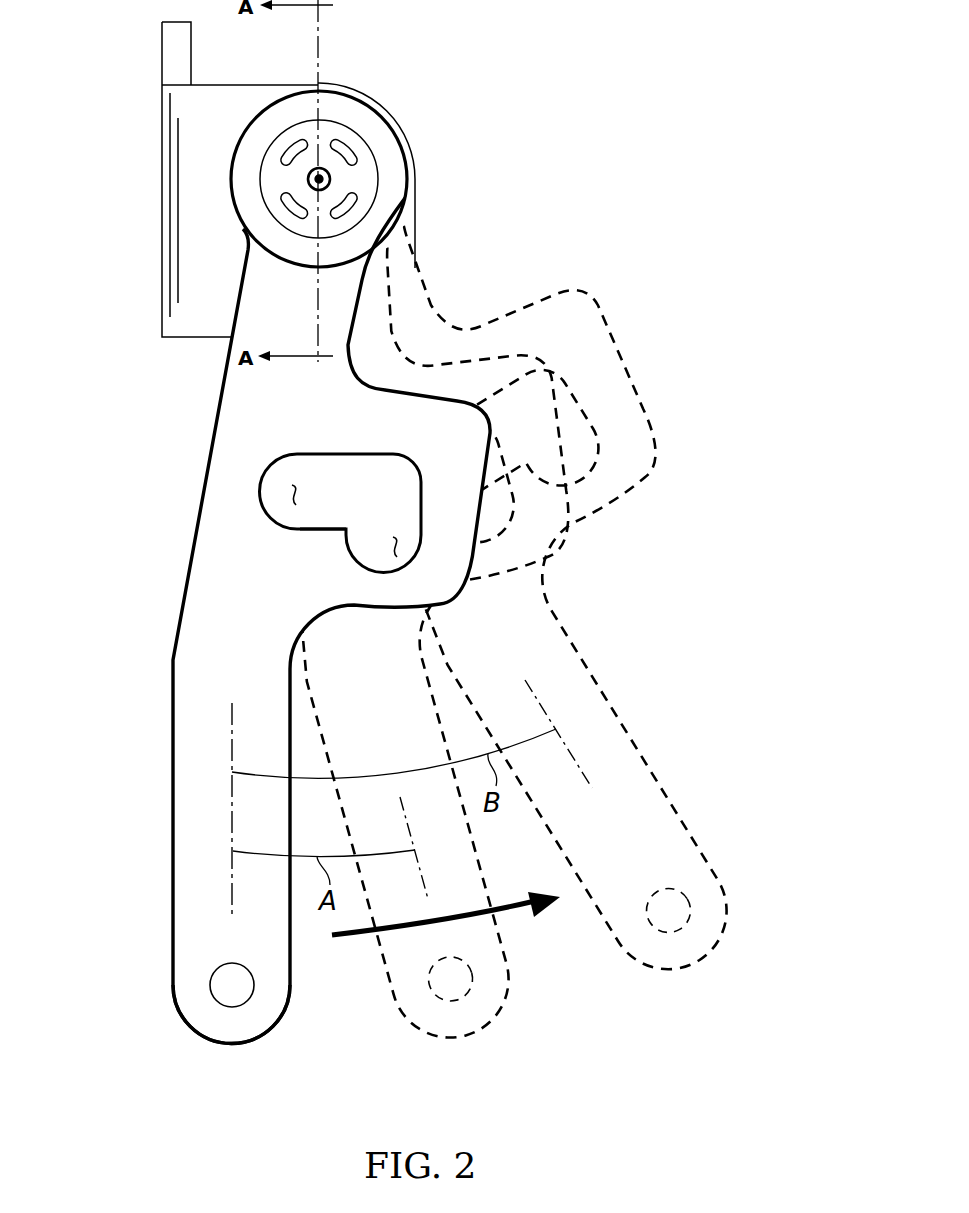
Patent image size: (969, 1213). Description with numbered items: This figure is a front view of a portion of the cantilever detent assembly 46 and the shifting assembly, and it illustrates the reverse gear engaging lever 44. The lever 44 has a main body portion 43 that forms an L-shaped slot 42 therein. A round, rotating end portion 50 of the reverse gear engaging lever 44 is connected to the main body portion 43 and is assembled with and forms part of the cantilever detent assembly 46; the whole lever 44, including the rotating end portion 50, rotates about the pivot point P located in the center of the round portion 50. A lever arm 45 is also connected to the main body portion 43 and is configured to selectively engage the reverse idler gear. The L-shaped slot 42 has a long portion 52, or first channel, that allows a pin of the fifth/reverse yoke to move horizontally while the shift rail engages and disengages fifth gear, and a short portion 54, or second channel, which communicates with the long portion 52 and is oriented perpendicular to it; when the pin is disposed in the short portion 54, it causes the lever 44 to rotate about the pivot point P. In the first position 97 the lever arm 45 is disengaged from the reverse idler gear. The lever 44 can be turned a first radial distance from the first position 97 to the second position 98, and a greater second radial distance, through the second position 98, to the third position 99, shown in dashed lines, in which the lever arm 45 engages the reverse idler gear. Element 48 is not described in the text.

The pivot point P is at (318, 179).
The L-shaped slot 42 is at (308, 540).
The main body portion 43 is at (240, 477).
The reverse gear engaging lever 44 is at (170, 714).
The lever arm 45 is at (197, 950).
The cantilever detent assembly 46 is at (372, 136).
The bracket 48 is at (193, 208).
The rotating end portion 50 is at (416, 180).
The long portion 52 is at (293, 495).
The short portion 54 is at (398, 547).
The first position 97 is at (163, 1010).
The second position 98 is at (510, 993).
The third position 99 is at (733, 914).